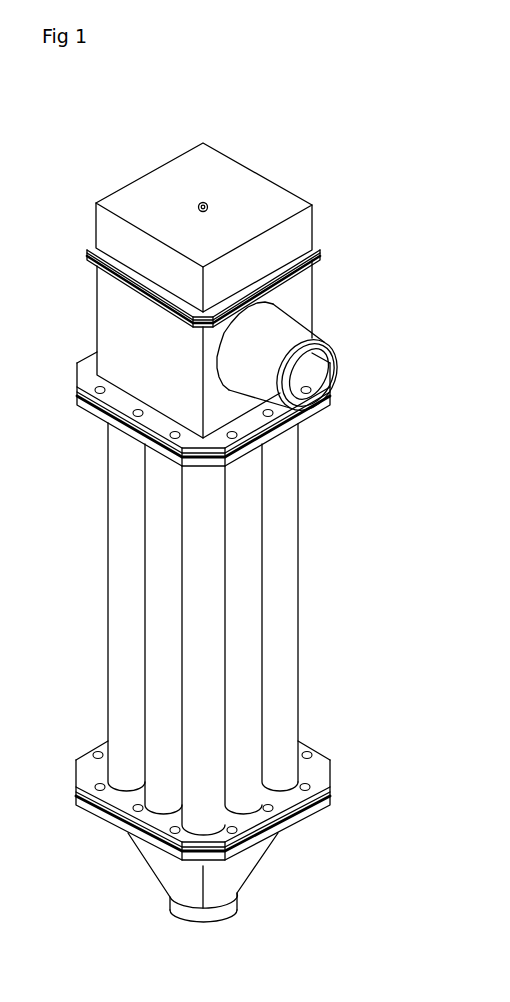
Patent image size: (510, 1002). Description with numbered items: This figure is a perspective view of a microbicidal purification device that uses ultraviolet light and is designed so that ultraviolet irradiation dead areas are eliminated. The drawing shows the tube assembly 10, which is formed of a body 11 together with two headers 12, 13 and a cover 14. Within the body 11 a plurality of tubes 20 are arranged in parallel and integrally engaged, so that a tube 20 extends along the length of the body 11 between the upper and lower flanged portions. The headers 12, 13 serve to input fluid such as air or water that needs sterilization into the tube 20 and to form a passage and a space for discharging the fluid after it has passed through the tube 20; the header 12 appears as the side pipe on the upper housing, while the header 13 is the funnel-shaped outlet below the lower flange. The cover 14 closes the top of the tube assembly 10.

The tube assembly 10 is at (390, 108).
The body 11 is at (314, 493).
The header 12 is at (322, 316).
The header 13 is at (273, 862).
The cover 14 is at (268, 166).
The tube 20 is at (298, 598).